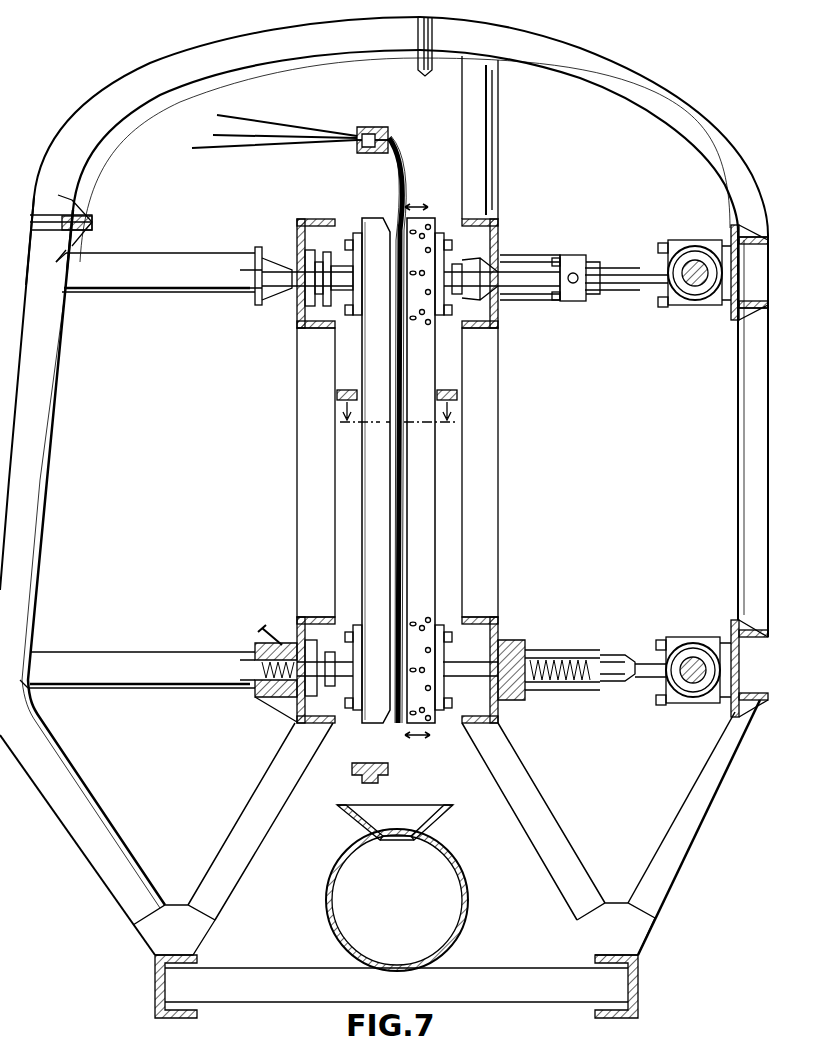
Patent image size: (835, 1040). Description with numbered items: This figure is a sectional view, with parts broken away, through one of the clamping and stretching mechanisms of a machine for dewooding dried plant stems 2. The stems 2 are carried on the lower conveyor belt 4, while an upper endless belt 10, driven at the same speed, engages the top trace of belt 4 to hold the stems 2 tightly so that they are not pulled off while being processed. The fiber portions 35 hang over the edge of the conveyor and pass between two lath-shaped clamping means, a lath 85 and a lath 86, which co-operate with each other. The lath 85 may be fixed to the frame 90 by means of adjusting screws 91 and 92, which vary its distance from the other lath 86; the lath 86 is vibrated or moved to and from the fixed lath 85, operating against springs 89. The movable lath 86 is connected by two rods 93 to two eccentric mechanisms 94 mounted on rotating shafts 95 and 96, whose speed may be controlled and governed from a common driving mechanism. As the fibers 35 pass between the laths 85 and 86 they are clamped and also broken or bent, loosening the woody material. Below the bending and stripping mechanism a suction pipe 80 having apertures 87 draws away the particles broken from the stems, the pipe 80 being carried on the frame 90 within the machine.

The stems 2 is at (255, 148).
The lower conveyor belt 4 is at (388, 771).
The endless belt 10 is at (388, 127).
The fibers 35 is at (404, 185).
The suction pipe 80 is at (403, 919).
The fixed lath 85 is at (384, 475).
The movable lath 86 is at (429, 475).
The apertures 87 is at (438, 824).
The springs 89 is at (540, 648).
The frame 90 is at (297, 537).
The adjusting screw 91 is at (283, 291).
The adjusting screw 92 is at (258, 645).
The rods 93 is at (645, 285).
The eccentric mechanisms 94 is at (692, 300).
The rotating shaft 95 is at (695, 262).
The rotating shaft 96 is at (698, 660).